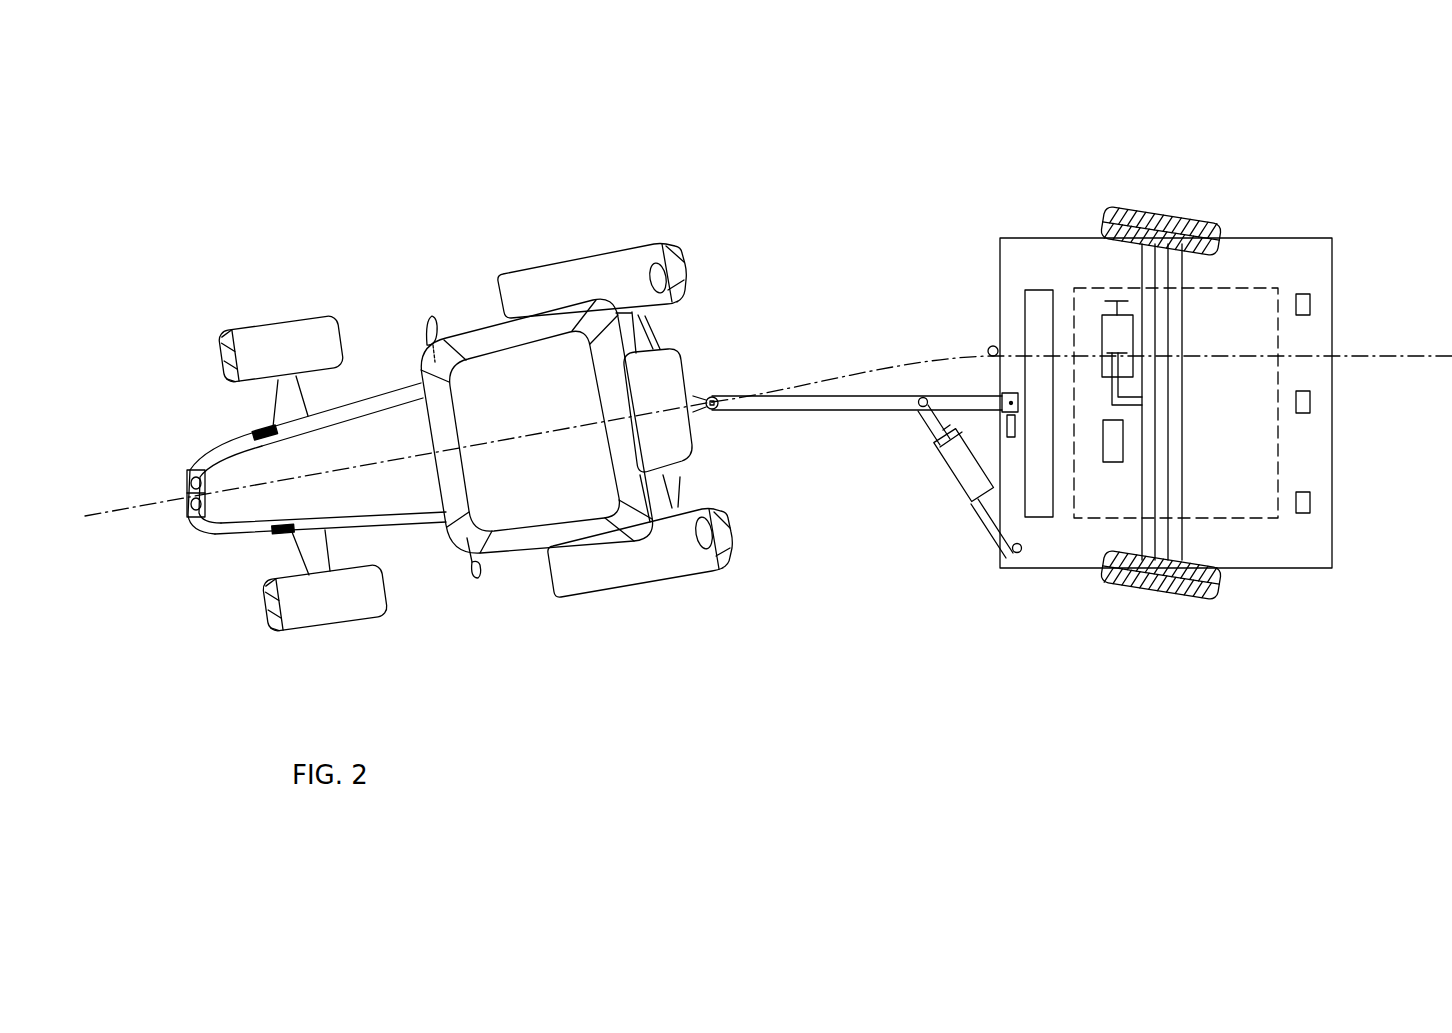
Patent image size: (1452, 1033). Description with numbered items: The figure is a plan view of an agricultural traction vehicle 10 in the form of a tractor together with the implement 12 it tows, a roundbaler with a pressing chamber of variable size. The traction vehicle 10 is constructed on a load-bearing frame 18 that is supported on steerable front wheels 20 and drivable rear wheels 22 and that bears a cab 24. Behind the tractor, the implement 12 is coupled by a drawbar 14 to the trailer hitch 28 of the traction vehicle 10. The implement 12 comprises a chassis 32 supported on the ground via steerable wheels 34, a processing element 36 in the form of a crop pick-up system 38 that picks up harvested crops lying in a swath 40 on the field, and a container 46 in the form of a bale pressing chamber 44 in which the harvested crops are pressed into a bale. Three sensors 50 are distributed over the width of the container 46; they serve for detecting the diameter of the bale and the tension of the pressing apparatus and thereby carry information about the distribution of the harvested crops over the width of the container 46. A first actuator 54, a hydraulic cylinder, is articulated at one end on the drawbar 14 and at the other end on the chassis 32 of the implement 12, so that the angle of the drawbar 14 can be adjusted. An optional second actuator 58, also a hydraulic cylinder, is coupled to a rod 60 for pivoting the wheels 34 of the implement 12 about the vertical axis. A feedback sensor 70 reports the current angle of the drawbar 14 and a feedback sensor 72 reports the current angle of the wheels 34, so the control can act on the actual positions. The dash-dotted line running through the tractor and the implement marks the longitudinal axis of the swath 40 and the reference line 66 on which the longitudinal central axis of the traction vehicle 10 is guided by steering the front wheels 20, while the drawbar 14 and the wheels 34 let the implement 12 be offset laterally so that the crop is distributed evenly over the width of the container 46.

The agricultural traction vehicle 10 is at (583, 658).
The implement 12 is at (1187, 622).
The drawbar 14 is at (833, 403).
The load-bearing frame 18 is at (398, 433).
The steerable front wheels 20 is at (278, 345).
The drivable rear wheels 22 is at (673, 244).
The cab 24 is at (511, 418).
The trailer hitch 28 is at (718, 410).
The chassis 32 is at (1270, 237).
The steerable wheels 34 is at (1198, 232).
The processing element 36 is at (1028, 312).
The crop pick-up system 38 is at (1040, 307).
The swath 40 is at (766, 411).
The bale pressing chamber 44 is at (1253, 319).
The container 46 is at (1263, 287).
The sensors 50 is at (1310, 502).
The first actuator 54 is at (963, 472).
The second actuator 58 is at (1108, 338).
The rod 60 is at (1148, 268).
The reference line 66 is at (121, 512).
The feedback sensor 70 is at (1011, 428).
The feedback sensor 72 is at (1115, 447).